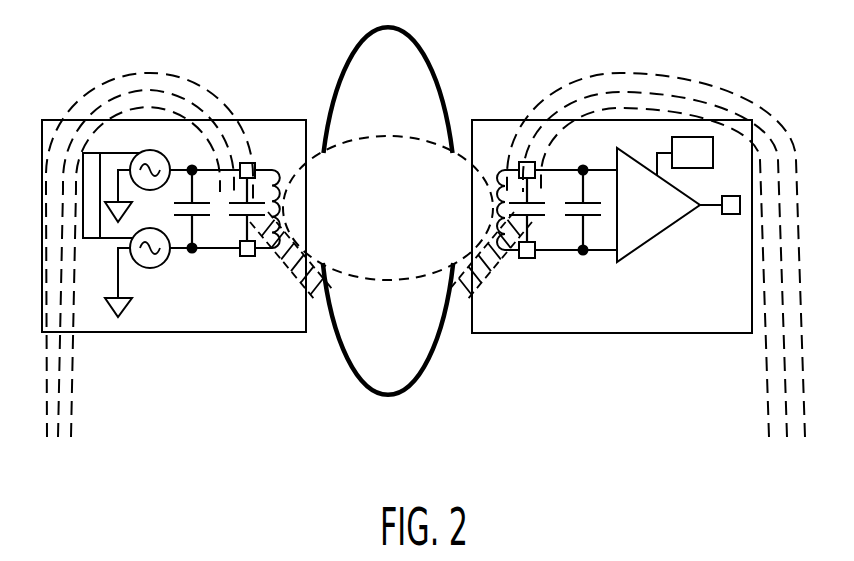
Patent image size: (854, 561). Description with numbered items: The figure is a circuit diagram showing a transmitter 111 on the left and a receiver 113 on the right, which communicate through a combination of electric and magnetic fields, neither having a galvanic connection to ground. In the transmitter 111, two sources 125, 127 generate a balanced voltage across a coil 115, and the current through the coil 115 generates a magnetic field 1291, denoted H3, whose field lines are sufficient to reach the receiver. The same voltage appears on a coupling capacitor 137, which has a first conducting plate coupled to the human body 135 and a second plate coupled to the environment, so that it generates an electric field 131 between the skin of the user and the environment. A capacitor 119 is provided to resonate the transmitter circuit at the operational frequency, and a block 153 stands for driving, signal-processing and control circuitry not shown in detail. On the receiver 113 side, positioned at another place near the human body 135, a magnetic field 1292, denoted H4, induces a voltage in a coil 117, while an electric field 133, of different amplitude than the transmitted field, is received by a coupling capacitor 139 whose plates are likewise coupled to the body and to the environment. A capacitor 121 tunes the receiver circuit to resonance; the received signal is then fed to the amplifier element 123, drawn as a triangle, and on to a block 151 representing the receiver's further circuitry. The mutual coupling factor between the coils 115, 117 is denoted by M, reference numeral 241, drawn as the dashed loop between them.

The transmitter 111 is at (263, 120).
The receiver 113 is at (640, 121).
The coil 115 is at (285, 178).
The coil 117 is at (493, 170).
The capacitor 119 is at (203, 220).
The capacitor 121 is at (595, 217).
The amplifier 123 is at (653, 238).
The source 125 is at (153, 268).
The source 127 is at (164, 155).
The electric field 131 is at (71, 400).
The electric field 133 is at (764, 380).
The human body 135 is at (413, 386).
The coupling capacitor 137 is at (232, 217).
The coupling capacitor 139 is at (540, 217).
The block 151 is at (693, 148).
The block 153 is at (92, 234).
The mutual coupling factor 241 is at (388, 228).
The magnetic field 1291 is at (290, 265).
The magnetic field 1292 is at (490, 262).